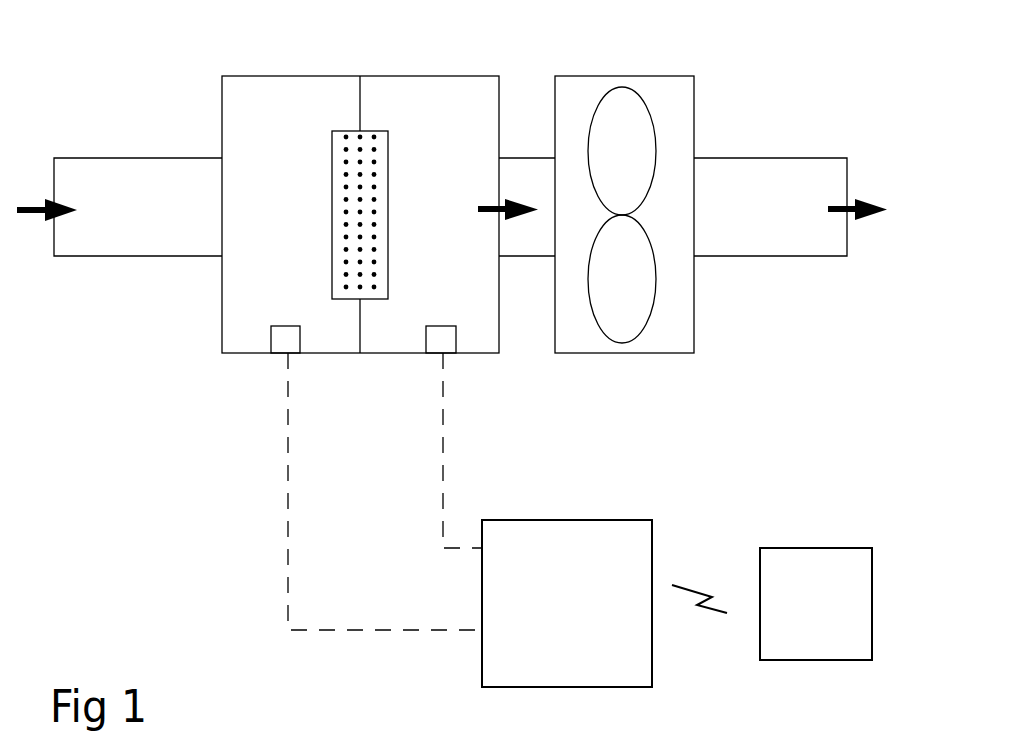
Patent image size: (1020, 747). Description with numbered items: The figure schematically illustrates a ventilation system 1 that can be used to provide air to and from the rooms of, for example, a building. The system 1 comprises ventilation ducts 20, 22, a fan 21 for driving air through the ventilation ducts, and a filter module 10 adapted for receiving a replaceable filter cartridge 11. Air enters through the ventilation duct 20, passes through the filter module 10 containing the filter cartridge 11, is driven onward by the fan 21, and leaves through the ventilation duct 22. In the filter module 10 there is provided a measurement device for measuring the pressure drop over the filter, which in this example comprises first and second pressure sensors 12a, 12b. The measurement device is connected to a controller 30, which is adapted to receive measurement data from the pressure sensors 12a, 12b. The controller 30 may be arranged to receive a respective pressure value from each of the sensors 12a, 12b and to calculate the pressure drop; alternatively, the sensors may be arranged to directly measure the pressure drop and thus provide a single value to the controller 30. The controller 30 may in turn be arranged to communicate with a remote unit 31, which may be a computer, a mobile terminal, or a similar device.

The ventilation system 1 is at (138, 62).
The filter module 10 is at (265, 75).
The replaceable filter cartridge 11 is at (375, 131).
The first pressure sensor 12a is at (282, 340).
The second pressure sensor 12b is at (452, 340).
The ventilation duct 20 is at (166, 252).
The fan 21 is at (617, 76).
The ventilation duct 22 is at (815, 252).
The controller 30 is at (553, 616).
The remote unit 31 is at (801, 616).